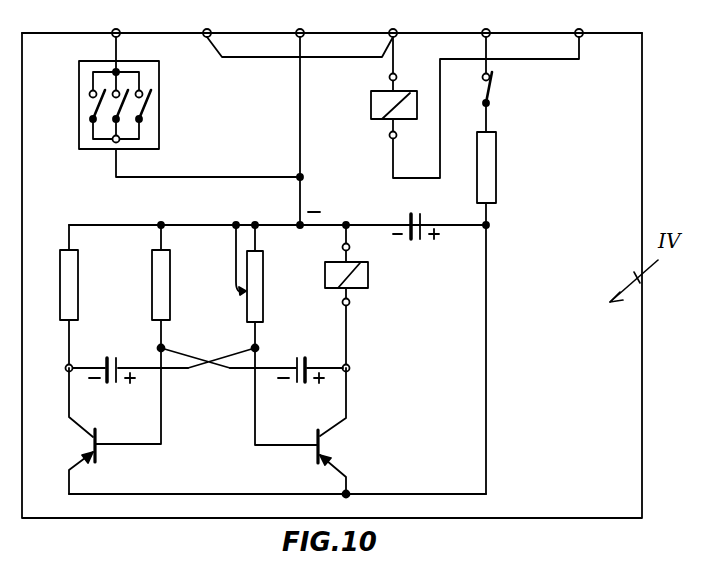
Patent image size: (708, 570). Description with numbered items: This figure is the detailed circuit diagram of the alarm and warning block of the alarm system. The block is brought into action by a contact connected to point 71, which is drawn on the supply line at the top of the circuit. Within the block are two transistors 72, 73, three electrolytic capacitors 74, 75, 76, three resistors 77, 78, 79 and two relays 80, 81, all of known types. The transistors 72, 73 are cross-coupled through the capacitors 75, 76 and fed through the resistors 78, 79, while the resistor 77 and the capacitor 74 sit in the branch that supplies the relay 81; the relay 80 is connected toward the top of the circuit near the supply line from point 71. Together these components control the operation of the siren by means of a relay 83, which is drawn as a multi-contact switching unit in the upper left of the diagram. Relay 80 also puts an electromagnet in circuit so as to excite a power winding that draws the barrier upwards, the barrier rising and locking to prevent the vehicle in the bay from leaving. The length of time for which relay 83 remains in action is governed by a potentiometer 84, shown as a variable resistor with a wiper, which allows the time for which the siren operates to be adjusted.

The point 71 is at (583, 30).
The transistor 72 is at (97, 456).
The transistor 73 is at (316, 452).
The electrolytic capacitor 74 is at (412, 243).
The electrolytic capacitor 75 is at (298, 357).
The electrolytic capacitor 76 is at (117, 357).
The resistor 77 is at (487, 167).
The resistor 78 is at (160, 284).
The resistor 79 is at (67, 281).
The relay 80 is at (371, 105).
The relay 81 is at (362, 283).
The relay 83 is at (160, 118).
The potentiometer 84 is at (258, 280).